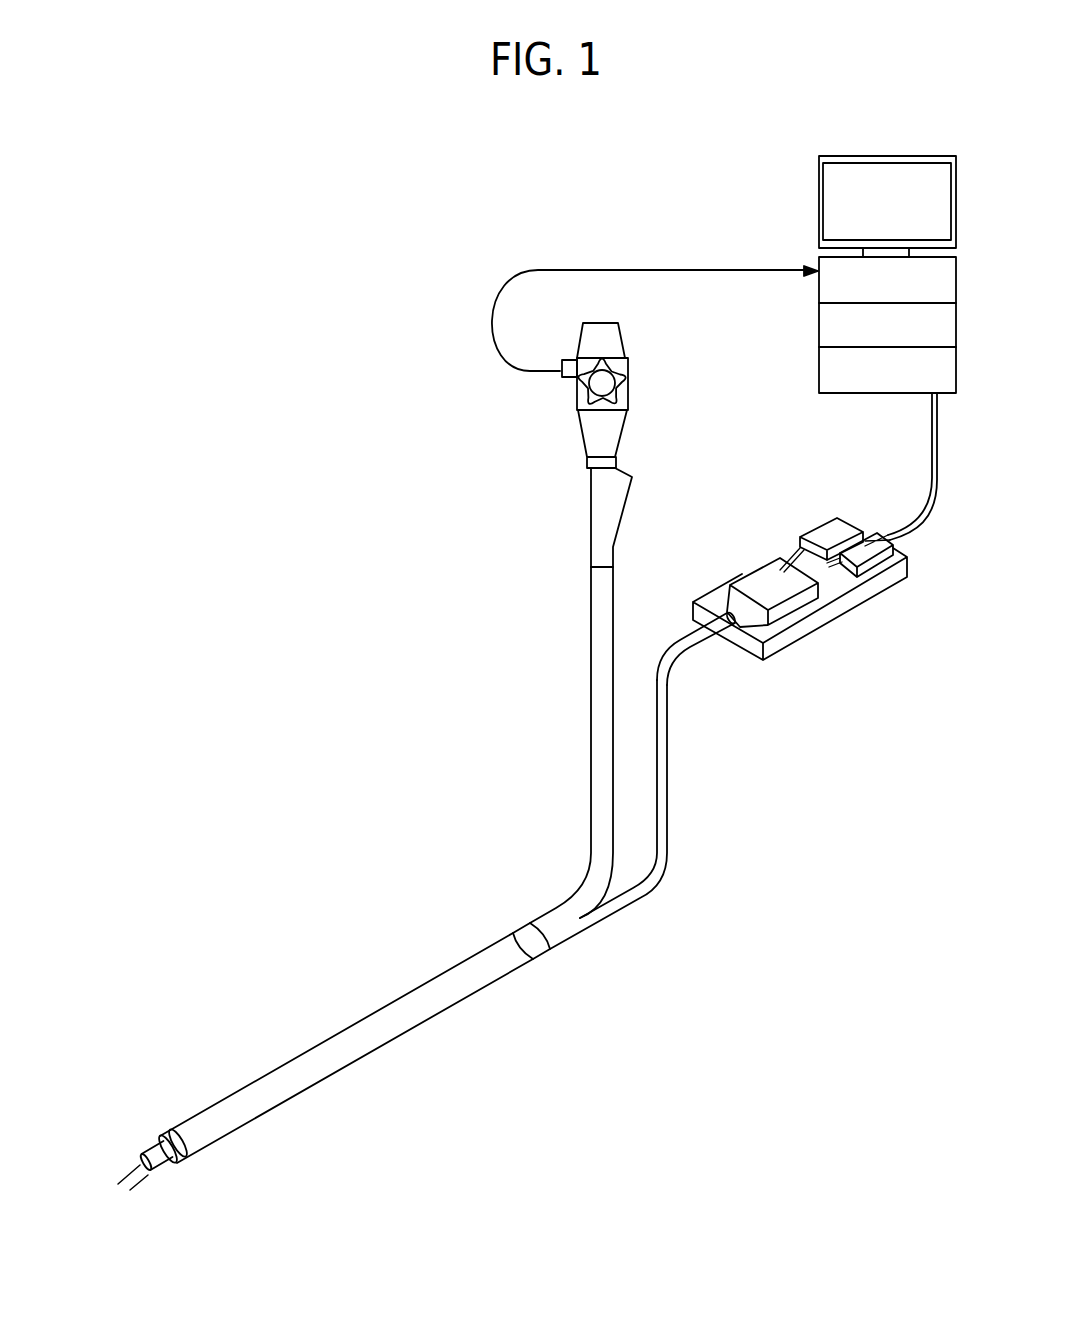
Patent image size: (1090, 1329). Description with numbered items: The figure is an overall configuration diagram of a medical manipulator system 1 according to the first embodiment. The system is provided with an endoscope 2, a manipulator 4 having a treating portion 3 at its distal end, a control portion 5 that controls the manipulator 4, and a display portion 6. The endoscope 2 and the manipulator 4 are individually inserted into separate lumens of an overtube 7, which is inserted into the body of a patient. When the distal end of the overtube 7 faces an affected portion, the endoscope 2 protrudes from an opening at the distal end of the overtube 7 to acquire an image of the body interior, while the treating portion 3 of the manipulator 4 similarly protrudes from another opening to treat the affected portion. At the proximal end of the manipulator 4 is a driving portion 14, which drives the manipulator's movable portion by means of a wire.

The medical manipulator system 1 is at (340, 305).
The endoscope 2 is at (562, 485).
The treating portion 3 is at (118, 1183).
The manipulator 4 is at (122, 1152).
The control portion 5 is at (806, 320).
The display portion 6 is at (806, 192).
The overtube 7 is at (394, 985).
The driving portion 14 is at (781, 516).